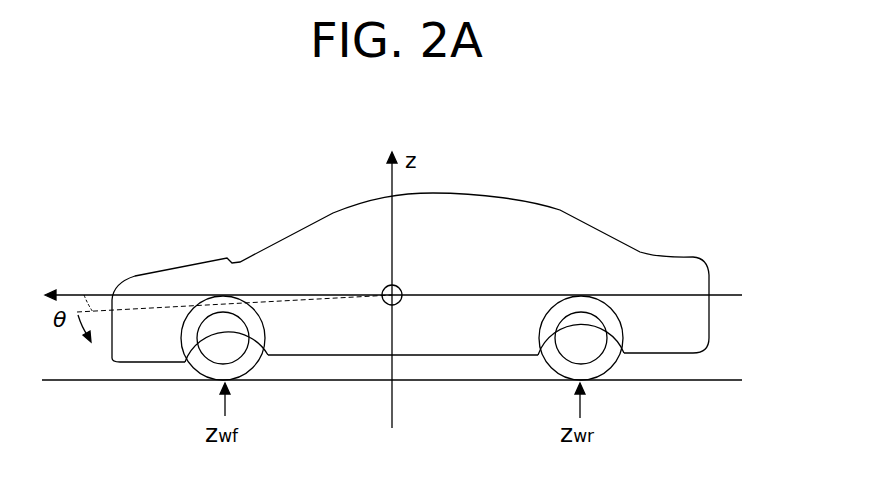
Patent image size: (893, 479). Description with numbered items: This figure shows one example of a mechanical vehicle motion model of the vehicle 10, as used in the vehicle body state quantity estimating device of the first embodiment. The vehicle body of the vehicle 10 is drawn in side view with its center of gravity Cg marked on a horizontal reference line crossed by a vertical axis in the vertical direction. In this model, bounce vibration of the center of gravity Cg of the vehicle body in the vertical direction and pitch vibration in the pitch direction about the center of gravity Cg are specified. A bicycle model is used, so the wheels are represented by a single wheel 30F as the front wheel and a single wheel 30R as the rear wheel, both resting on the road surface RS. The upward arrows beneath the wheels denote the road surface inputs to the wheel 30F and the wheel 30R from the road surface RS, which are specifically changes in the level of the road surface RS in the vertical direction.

The vehicle 10 is at (665, 251).
The wheel (front wheel) 30F is at (253, 368).
The wheel (rear wheel) 30R is at (542, 365).
The road surface RS is at (723, 380).
The center of gravity Cg is at (400, 281).